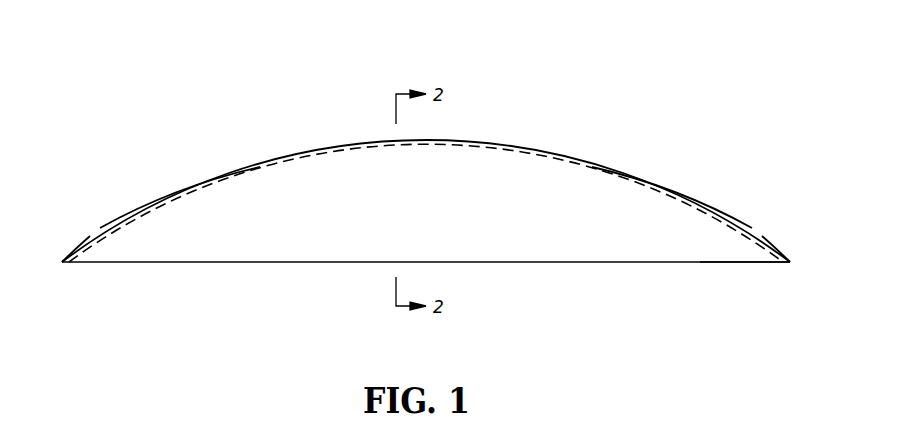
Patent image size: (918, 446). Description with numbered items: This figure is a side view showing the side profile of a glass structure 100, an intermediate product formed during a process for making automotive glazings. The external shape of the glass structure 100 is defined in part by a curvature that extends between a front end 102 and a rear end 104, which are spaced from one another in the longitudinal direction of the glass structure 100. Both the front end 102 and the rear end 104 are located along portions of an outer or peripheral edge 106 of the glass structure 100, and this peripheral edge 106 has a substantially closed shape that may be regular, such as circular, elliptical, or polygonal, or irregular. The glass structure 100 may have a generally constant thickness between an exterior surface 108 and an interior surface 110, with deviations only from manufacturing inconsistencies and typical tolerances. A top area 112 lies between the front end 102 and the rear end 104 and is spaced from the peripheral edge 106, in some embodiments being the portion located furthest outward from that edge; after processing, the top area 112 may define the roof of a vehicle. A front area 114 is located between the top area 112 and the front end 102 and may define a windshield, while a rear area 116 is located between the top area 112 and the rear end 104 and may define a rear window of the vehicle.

The glass structure 100 is at (122, 70).
The front end 102 is at (70, 257).
The rear end 104 is at (781, 256).
The peripheral edge 106 is at (731, 263).
The exterior surface 108 is at (578, 245).
The interior surface 110 is at (565, 160).
The top area 112 is at (427, 139).
The front area 114 is at (185, 187).
The rear area 116 is at (667, 188).